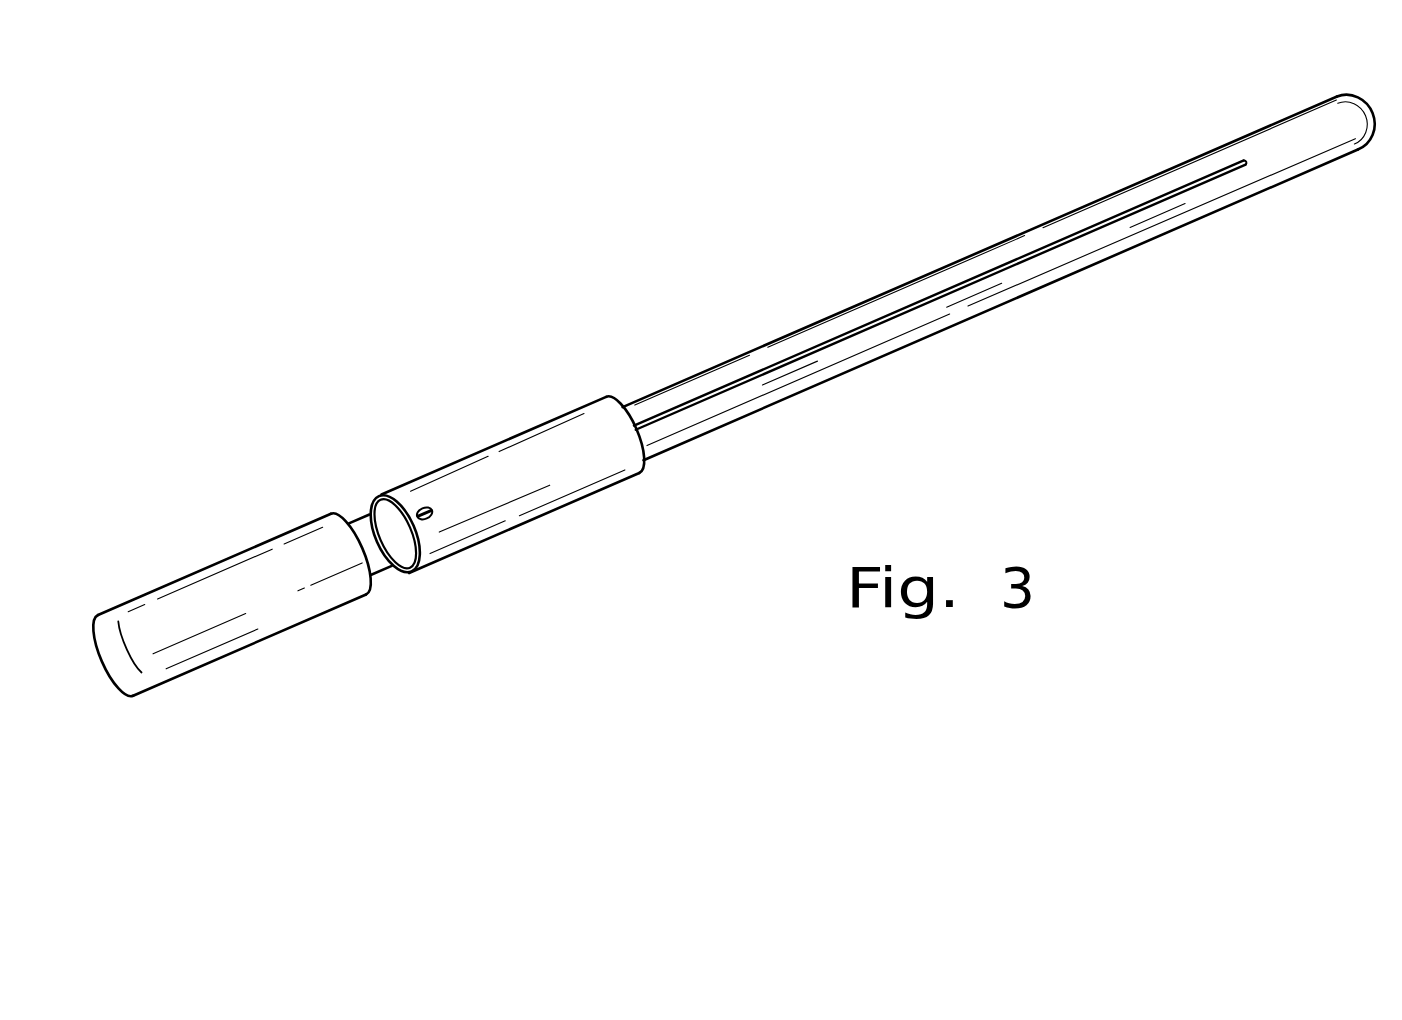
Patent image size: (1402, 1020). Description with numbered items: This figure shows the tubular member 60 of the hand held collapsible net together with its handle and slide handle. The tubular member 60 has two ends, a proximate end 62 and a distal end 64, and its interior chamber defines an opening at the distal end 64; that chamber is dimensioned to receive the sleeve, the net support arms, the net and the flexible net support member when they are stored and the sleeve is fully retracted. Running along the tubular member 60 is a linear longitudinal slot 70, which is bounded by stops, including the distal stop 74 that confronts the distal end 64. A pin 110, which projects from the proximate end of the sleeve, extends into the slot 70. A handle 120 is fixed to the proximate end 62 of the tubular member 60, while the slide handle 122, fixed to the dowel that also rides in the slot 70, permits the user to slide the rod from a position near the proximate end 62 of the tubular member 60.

The tubular member 60 is at (1002, 266).
The proximate end 62 is at (733, 443).
The distal end 64 is at (1297, 133).
The linear longitudinal slot 70 is at (765, 372).
The distal stop 74 is at (1245, 163).
The pin 110 is at (506, 485).
The handle 120 is at (244, 629).
The slide handle 122 is at (430, 523).